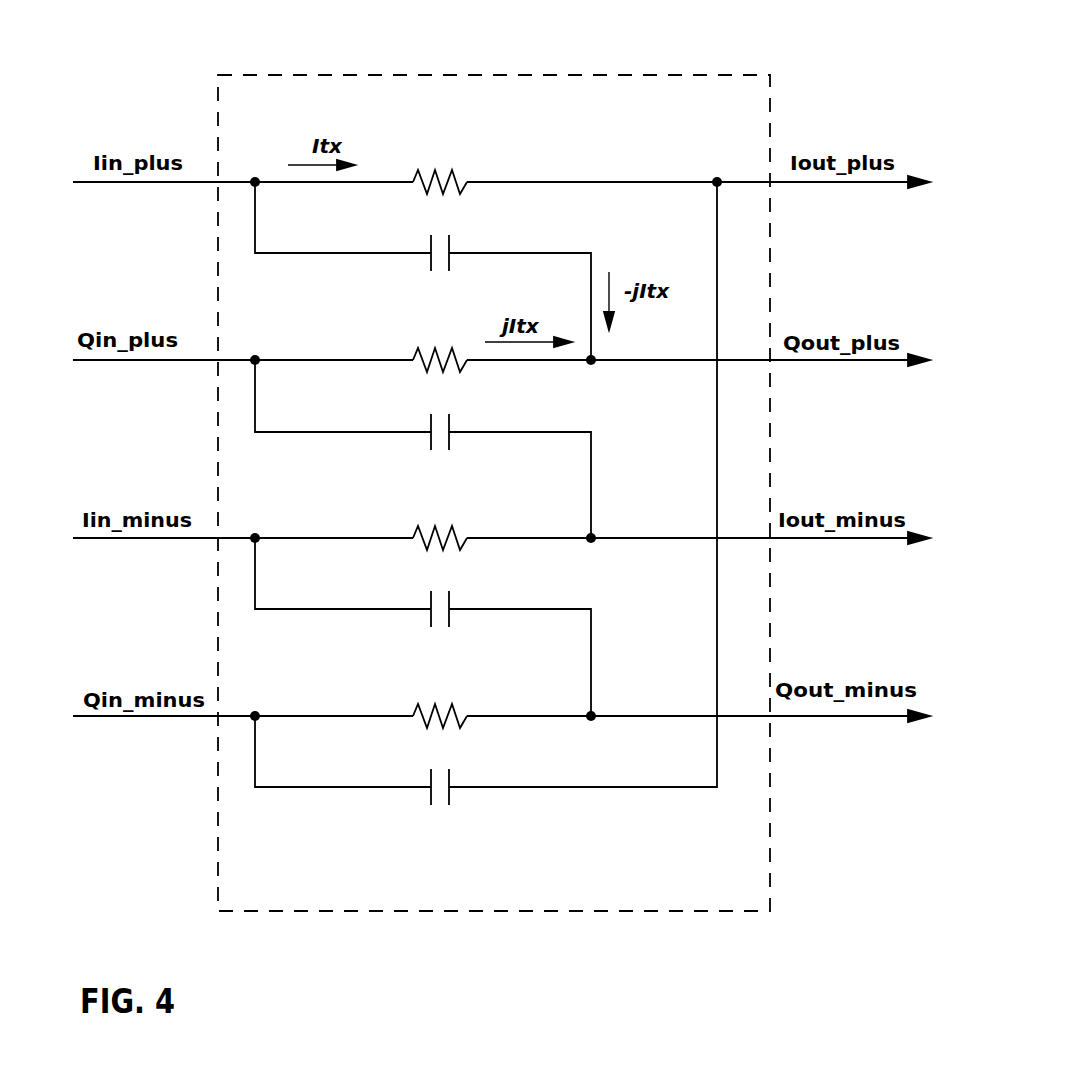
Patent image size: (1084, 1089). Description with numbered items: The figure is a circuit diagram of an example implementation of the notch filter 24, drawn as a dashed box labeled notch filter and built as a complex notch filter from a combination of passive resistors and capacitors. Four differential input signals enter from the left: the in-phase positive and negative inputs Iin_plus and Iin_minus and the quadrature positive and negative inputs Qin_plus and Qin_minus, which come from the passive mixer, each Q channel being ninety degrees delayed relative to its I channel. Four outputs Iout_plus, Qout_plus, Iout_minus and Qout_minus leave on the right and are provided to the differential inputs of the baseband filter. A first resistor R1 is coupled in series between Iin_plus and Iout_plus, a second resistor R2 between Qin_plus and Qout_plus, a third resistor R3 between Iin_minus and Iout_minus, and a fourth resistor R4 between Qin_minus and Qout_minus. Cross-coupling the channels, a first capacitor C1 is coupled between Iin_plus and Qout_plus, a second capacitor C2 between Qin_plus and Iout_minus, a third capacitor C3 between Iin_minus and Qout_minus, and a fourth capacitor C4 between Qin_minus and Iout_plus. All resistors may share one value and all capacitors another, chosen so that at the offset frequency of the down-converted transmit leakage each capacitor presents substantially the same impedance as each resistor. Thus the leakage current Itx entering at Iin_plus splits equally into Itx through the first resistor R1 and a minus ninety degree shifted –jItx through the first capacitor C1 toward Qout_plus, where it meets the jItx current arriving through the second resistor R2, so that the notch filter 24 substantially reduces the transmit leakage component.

The notch filter 24 is at (520, 75).
The first resistor R1 is at (440, 168).
The second resistor R2 is at (440, 344).
The third resistor R3 is at (440, 522).
The fourth resistor R4 is at (440, 699).
The first capacitor C1 is at (421, 259).
The second capacitor C2 is at (421, 438).
The third capacitor C3 is at (421, 615).
The fourth capacitor C4 is at (418, 793).